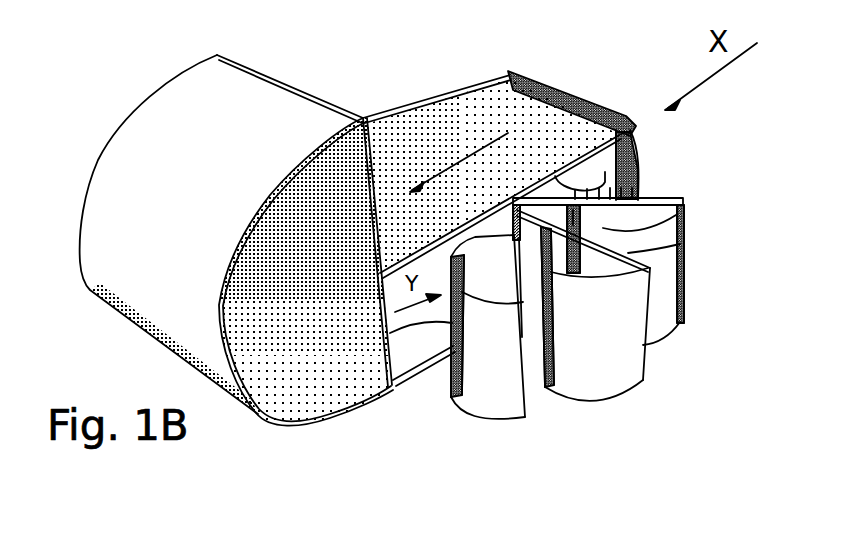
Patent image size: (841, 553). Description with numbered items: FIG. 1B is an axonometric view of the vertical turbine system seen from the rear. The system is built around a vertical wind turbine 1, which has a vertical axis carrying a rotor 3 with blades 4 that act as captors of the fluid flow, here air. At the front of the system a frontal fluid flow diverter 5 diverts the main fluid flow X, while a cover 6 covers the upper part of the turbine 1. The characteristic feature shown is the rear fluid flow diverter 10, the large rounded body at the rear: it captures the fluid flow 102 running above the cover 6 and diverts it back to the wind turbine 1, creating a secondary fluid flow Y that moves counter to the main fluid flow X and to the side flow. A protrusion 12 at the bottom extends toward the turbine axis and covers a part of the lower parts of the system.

The vertical wind turbine 1 is at (670, 177).
The rotor 3 is at (632, 252).
The blades 4 is at (618, 360).
The frontal fluid flow diverter 5 is at (590, 93).
The cover 6 is at (447, 137).
The rear fluid flow diverter 10 is at (140, 157).
The protrusion 12 is at (407, 355).
The fluid flow running above the cover 102 is at (459, 145).